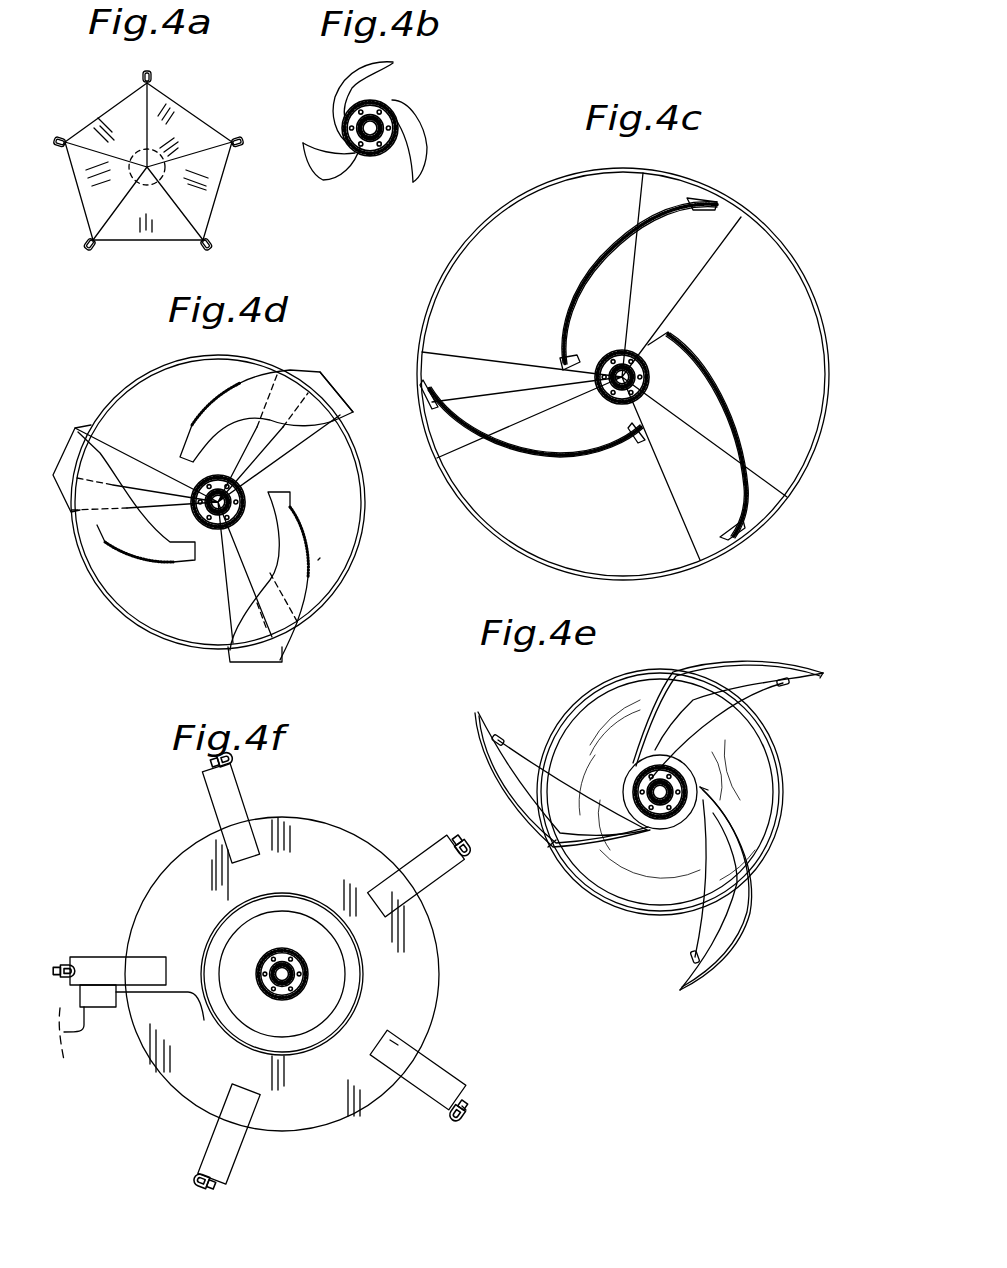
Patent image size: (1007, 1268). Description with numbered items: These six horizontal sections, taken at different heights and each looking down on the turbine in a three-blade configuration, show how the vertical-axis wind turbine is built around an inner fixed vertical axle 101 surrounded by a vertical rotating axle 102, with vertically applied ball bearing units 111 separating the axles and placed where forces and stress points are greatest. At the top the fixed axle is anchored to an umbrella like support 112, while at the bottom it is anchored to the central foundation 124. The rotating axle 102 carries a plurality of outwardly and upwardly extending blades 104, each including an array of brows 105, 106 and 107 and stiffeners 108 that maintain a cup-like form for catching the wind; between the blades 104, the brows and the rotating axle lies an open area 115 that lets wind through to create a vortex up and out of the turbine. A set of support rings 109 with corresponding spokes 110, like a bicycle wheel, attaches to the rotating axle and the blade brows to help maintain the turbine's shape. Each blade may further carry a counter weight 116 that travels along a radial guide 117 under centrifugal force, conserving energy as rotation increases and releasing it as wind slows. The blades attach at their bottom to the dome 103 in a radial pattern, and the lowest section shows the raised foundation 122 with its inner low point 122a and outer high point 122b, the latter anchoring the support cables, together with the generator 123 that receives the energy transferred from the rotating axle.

In FIG. 4B, the inner fixed vertical axle 101 is at (398, 128).
In FIG. 4C, the inner fixed vertical axle 101 is at (636, 385).
In FIG. 4D, the inner fixed vertical axle 101 is at (216, 532).
In FIG. 4E, the inner fixed vertical axle 101 is at (668, 820).
In FIG. 4F, the inner fixed vertical axle 101 is at (258, 962).
In FIG. 4B, the vertical rotating axle 102 is at (363, 150).
In FIG. 4C, the vertical rotating axle 102 is at (604, 395).
In FIG. 4D, the vertical rotating axle 102 is at (245, 495).
In FIG. 4E, the vertical rotating axle 102 is at (668, 775).
In FIG. 4F, the vertical rotating axle 102 is at (278, 950).
In FIG. 4E, the dome 103 is at (640, 668).
In FIG. 4B, the blade 104 is at (340, 88).
In FIG. 4C, the blade 104 is at (590, 262).
In FIG. 4D, the blade 104 is at (190, 425).
In FIG. 4E, the blade 104 is at (758, 662).
In FIG. 4C, the brow 105 is at (572, 352).
In FIG. 4D, the brow 105 is at (300, 552).
In FIG. 4C, the brow 106 is at (697, 198).
In FIG. 4D, the brow 106 is at (290, 652).
In FIG. 4E, the brow 107 is at (556, 862).
In FIG. 4C, the stiffener 108 is at (702, 215).
In FIG. 4C, the support ring 109 is at (673, 172).
In FIG. 4D, the support ring 109 is at (104, 625).
In FIG. 4C, the spoke 110 is at (500, 350).
In FIG. 4D, the spoke 110 is at (123, 458).
In FIG. 4B, the ball bearing unit 111 is at (388, 108).
In FIG. 4C, the ball bearing unit 111 is at (641, 371).
In FIG. 4D, the ball bearing unit 111 is at (195, 480).
In FIG. 4E, the ball bearing unit 111 is at (678, 782).
In FIG. 4F, the ball bearing unit 111 is at (290, 945).
In FIG. 4A, the umbrella like support 112 is at (182, 70).
In FIG. 4D, the open area 115 is at (198, 475).
In FIG. 4E, the counter weight 116 is at (505, 725).
In FIG. 4E, the radial guide 117 is at (528, 755).
In FIG. 4F, the foundation 122 is at (445, 1062).
In FIG. 4F, the inner low point 122a is at (395, 1040).
In FIG. 4F, the outer high point 122b is at (472, 1106).
In FIG. 4F, the generator 123 is at (365, 978).
In FIG. 4F, the central foundation 124 is at (305, 1121).